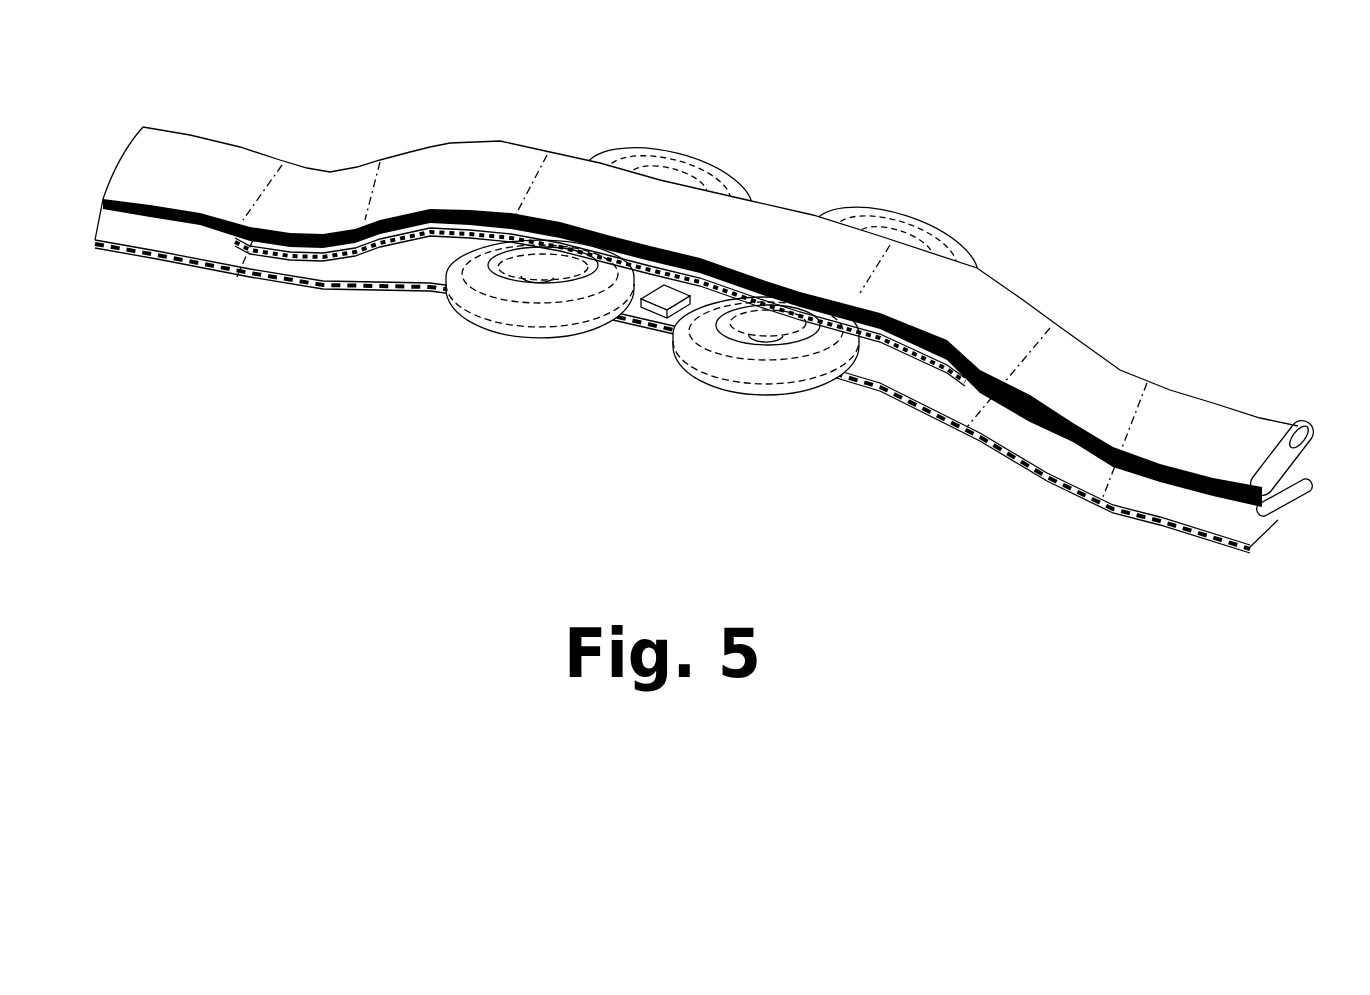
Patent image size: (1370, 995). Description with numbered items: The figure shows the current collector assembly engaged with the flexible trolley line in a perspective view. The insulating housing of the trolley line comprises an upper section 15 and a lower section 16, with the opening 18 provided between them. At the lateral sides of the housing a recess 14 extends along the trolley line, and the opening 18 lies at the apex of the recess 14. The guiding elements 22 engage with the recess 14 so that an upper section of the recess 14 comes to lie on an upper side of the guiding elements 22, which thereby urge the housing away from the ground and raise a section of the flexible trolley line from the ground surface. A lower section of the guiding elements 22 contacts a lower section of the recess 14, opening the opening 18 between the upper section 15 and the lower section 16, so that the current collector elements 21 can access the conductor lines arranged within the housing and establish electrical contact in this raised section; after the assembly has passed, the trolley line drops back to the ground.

The recess 14 is at (1160, 483).
The upper section 15 is at (1233, 425).
The lower section 16 is at (1272, 522).
The opening 18 is at (403, 237).
The current collector elements 21 is at (681, 288).
The guiding elements 22 is at (533, 323).